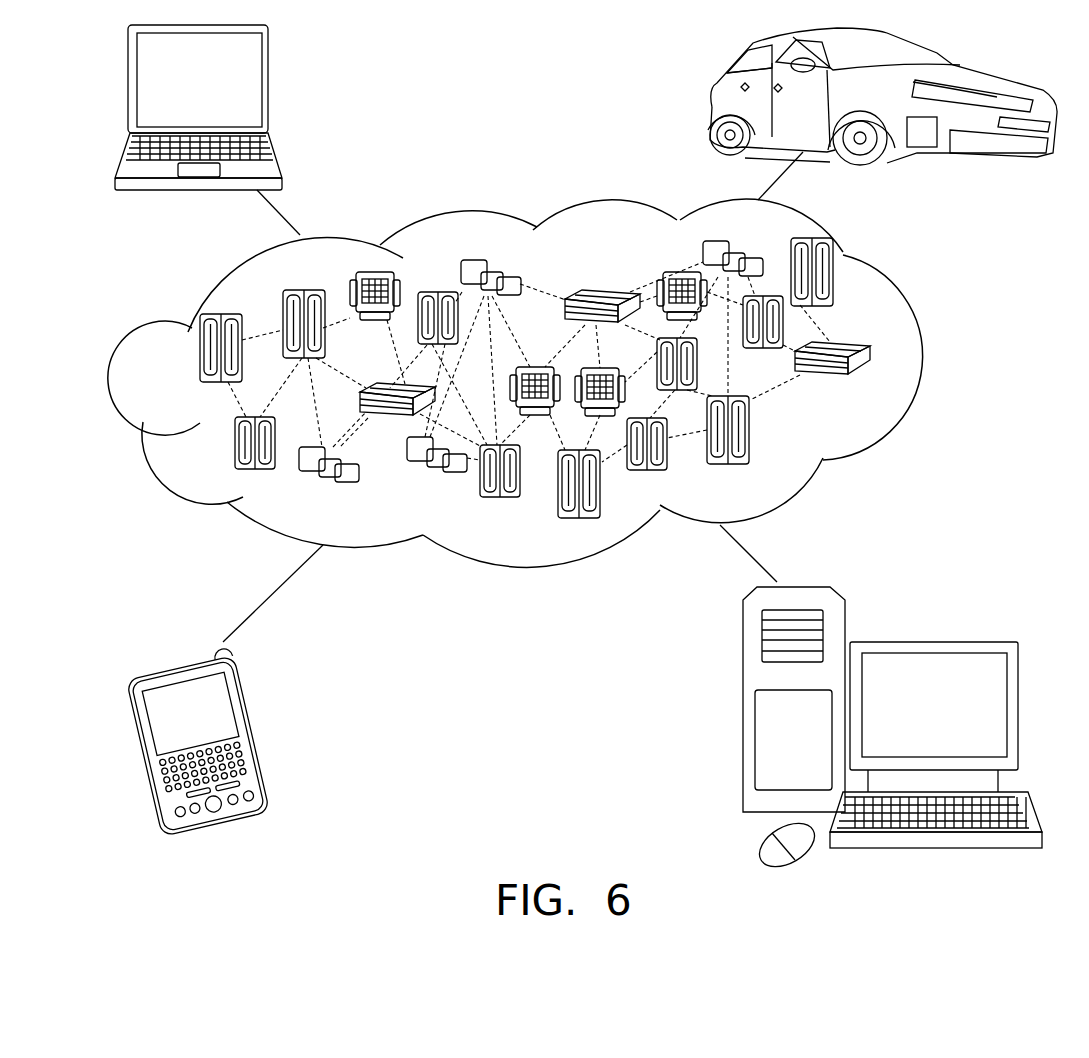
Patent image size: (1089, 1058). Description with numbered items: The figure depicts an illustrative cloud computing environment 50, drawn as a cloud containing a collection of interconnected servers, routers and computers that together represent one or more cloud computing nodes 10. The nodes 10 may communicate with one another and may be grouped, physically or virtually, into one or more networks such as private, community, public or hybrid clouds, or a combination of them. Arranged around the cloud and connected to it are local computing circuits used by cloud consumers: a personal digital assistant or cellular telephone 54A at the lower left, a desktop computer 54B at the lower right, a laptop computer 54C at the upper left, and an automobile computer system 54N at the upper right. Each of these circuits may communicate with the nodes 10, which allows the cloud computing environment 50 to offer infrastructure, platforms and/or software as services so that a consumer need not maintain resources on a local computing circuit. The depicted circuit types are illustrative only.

The cloud computing node 10 is at (589, 378).
The cloud computing environment 50 is at (930, 358).
The personal digital assistant or cellular telephone 54A is at (253, 737).
The desktop computer 54B is at (930, 642).
The laptop computer 54C is at (270, 88).
The automobile computer system 54N is at (710, 102).